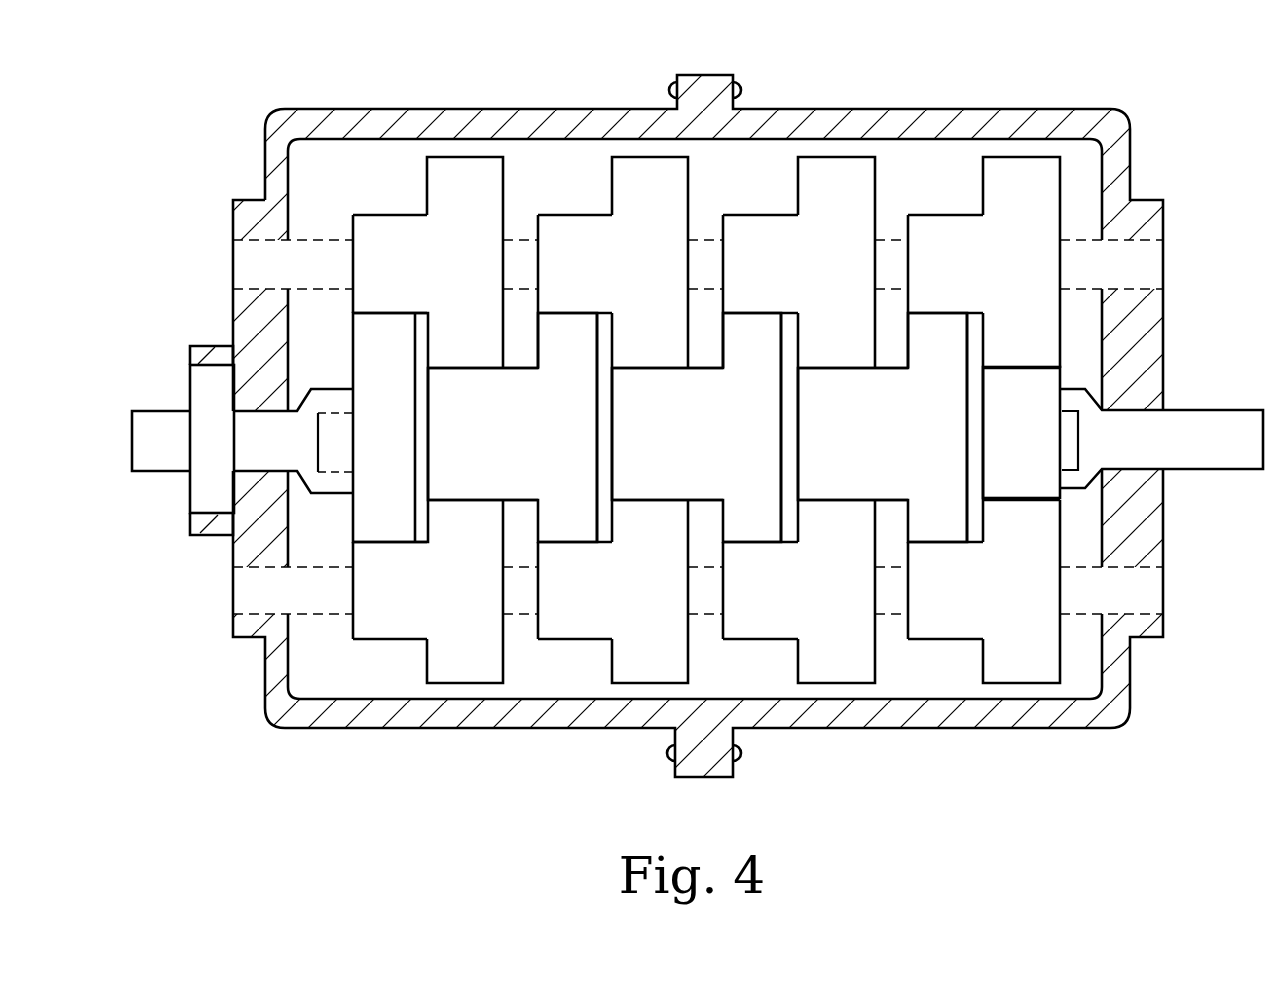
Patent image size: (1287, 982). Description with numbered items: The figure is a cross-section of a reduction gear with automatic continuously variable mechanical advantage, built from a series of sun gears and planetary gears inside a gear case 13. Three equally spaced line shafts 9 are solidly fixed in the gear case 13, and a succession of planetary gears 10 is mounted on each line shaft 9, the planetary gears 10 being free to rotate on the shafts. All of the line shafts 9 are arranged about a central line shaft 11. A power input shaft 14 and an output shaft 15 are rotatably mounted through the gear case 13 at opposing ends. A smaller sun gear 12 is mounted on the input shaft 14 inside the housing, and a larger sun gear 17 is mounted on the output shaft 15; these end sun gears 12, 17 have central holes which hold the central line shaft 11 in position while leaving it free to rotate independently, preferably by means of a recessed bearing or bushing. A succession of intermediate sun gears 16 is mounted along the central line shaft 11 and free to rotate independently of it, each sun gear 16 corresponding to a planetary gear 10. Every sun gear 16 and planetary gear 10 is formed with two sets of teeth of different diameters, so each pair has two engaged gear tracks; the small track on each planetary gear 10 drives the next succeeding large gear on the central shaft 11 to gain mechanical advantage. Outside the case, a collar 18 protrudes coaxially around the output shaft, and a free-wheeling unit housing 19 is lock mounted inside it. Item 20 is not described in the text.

The line shafts 9 is at (310, 603).
The planetary gears 10 is at (706, 420).
The central line shaft 11 is at (1068, 437).
The smaller sun gear 12 is at (1021, 432).
The gear case 13 is at (592, 107).
The power input shaft 14 is at (1161, 438).
The output shaft 15 is at (152, 468).
The intermediate sun gears 16 is at (705, 427).
The larger sun gear 17 is at (390, 427).
The collar 18 is at (200, 343).
The free-wheeling unit housing 19 is at (190, 495).
The pole piece edge 20 is at (533, 237).